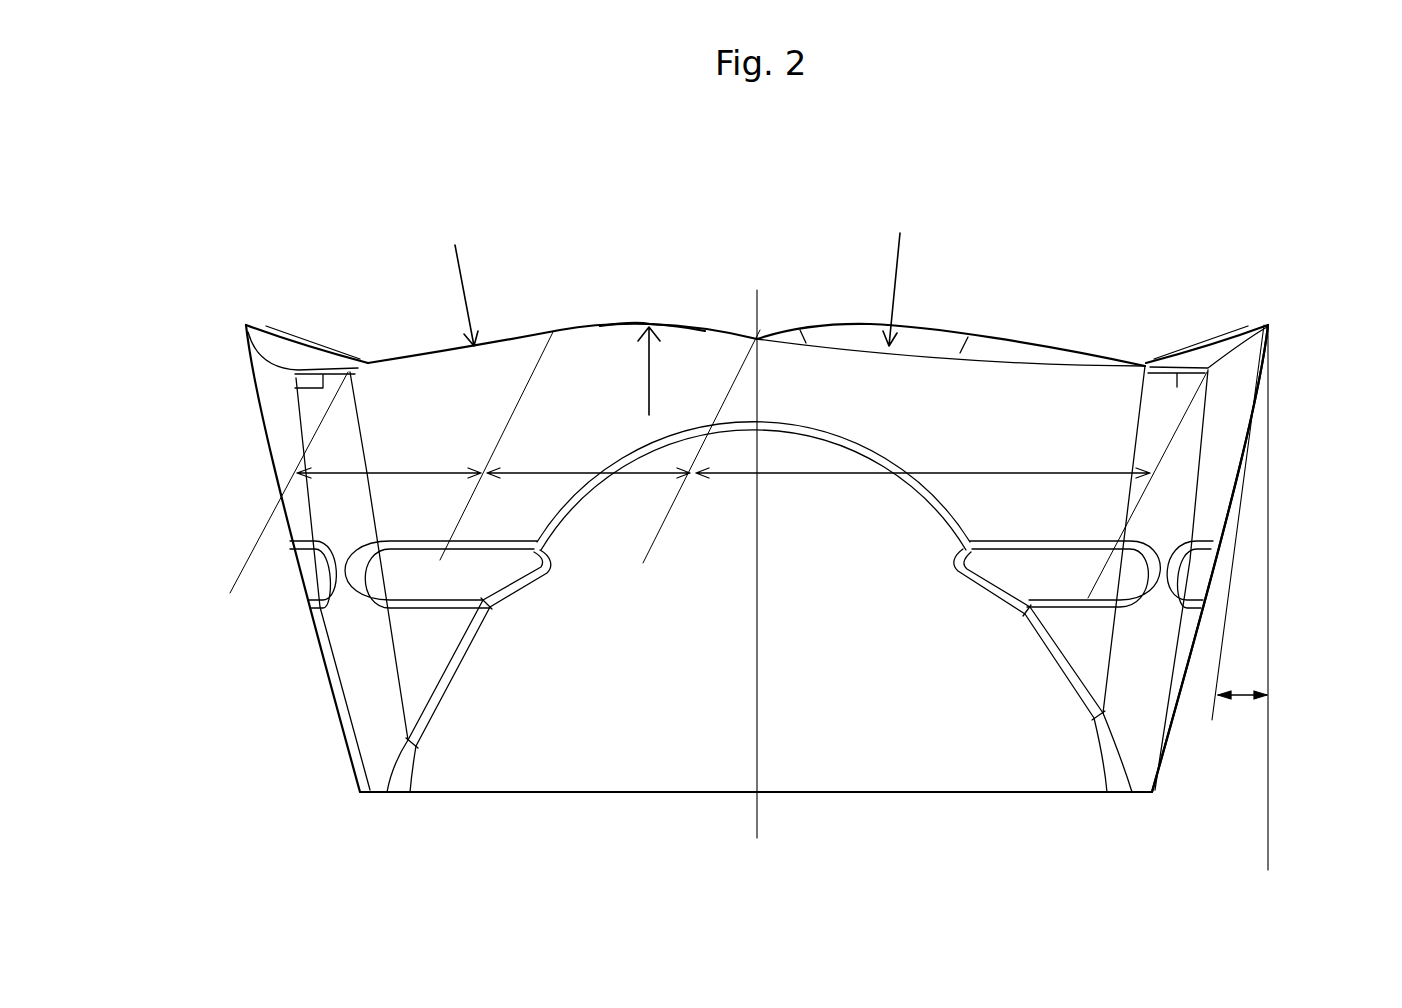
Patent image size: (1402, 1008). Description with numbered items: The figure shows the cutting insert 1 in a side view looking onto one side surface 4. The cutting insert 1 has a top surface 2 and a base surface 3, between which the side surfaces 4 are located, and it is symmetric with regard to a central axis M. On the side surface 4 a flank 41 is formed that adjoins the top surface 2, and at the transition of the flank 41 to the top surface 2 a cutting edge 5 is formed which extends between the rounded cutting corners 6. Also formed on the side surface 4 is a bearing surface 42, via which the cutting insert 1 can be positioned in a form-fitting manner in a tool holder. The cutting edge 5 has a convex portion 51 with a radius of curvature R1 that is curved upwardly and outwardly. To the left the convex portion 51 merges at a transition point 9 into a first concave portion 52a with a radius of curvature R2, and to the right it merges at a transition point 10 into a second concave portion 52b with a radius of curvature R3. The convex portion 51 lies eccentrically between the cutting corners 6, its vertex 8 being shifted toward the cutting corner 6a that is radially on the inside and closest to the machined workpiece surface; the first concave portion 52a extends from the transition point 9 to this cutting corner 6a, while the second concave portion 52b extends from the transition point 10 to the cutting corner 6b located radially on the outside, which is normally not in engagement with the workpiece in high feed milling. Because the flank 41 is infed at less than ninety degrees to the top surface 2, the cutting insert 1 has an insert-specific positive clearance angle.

The cutting insert 1 is at (190, 320).
The top surface 2 is at (1034, 257).
The base surface 3 is at (900, 825).
The side surface 4 is at (1310, 621).
The cutting edge 5 is at (420, 358).
The cutting corners 6 is at (776, 461).
The cutting corner located radially on the inside 6a is at (322, 388).
The cutting corner located radially on the outside 6b is at (1177, 387).
The vertex 8 is at (650, 323).
The first transition point 9 is at (553, 335).
The second transition point 10 is at (760, 330).
The flank 41 is at (890, 419).
The bearing surface 42 is at (980, 723).
The convex portion 51 is at (588, 461).
The first concave portion 52a is at (389, 461).
The second concave portion 52b is at (923, 461).
The radius of curvature of the convex portion R1 is at (661, 371).
The radius of curvature of the first concave portion R2 is at (480, 295).
The radius of curvature of the second concave portion R3 is at (910, 289).
The central axis M is at (752, 551).